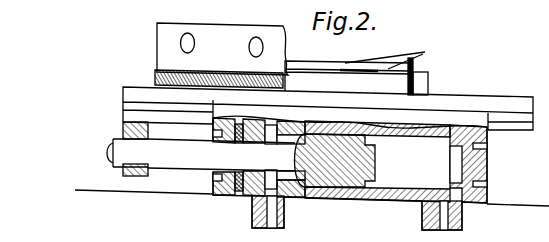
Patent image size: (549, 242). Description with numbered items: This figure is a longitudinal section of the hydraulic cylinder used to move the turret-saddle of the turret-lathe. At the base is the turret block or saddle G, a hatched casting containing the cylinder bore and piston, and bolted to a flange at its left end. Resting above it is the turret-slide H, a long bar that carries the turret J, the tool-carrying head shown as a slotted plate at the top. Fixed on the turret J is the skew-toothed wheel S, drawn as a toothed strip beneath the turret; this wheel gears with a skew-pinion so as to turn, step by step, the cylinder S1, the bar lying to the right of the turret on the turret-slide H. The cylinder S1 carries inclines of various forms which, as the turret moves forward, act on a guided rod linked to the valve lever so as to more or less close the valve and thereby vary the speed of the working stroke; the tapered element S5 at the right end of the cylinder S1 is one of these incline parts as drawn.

The turret J is at (222, 49).
The skew-toothed wheel S is at (153, 77).
The cylinder S1 is at (318, 64).
The spring stop S5 is at (413, 62).
The turret-slide H is at (482, 98).
The turret block or saddle G is at (483, 121).